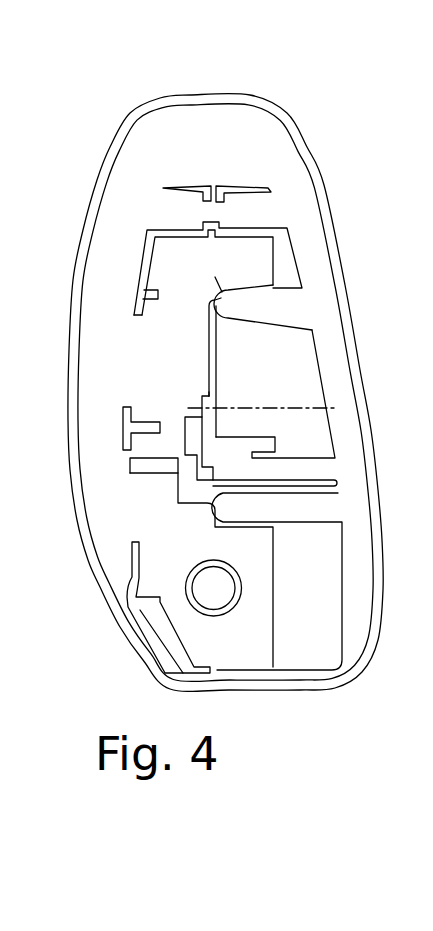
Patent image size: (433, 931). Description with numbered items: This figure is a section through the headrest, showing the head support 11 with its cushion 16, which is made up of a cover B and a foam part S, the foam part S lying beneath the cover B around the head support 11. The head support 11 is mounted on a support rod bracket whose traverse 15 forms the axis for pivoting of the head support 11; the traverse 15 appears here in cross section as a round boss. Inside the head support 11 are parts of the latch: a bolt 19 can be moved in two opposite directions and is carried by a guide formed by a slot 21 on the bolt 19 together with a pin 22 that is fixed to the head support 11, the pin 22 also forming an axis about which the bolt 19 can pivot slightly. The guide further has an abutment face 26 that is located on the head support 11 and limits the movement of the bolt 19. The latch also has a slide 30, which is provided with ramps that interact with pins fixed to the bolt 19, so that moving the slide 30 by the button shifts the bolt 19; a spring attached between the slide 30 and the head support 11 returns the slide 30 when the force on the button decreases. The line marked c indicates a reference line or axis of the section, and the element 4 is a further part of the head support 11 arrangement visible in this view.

The cover B is at (252, 98).
The foam part S is at (147, 180).
The cushion 16 is at (299, 214).
The head support 11 is at (143, 263).
The abutment face 26 is at (220, 297).
The bolt 19 is at (203, 347).
The slot 21 is at (223, 387).
The pin 22 is at (202, 399).
The slide 30 is at (197, 437).
The axis c is at (293, 405).
The traverse 15 is at (207, 592).
The housing part 4 is at (6, 502).